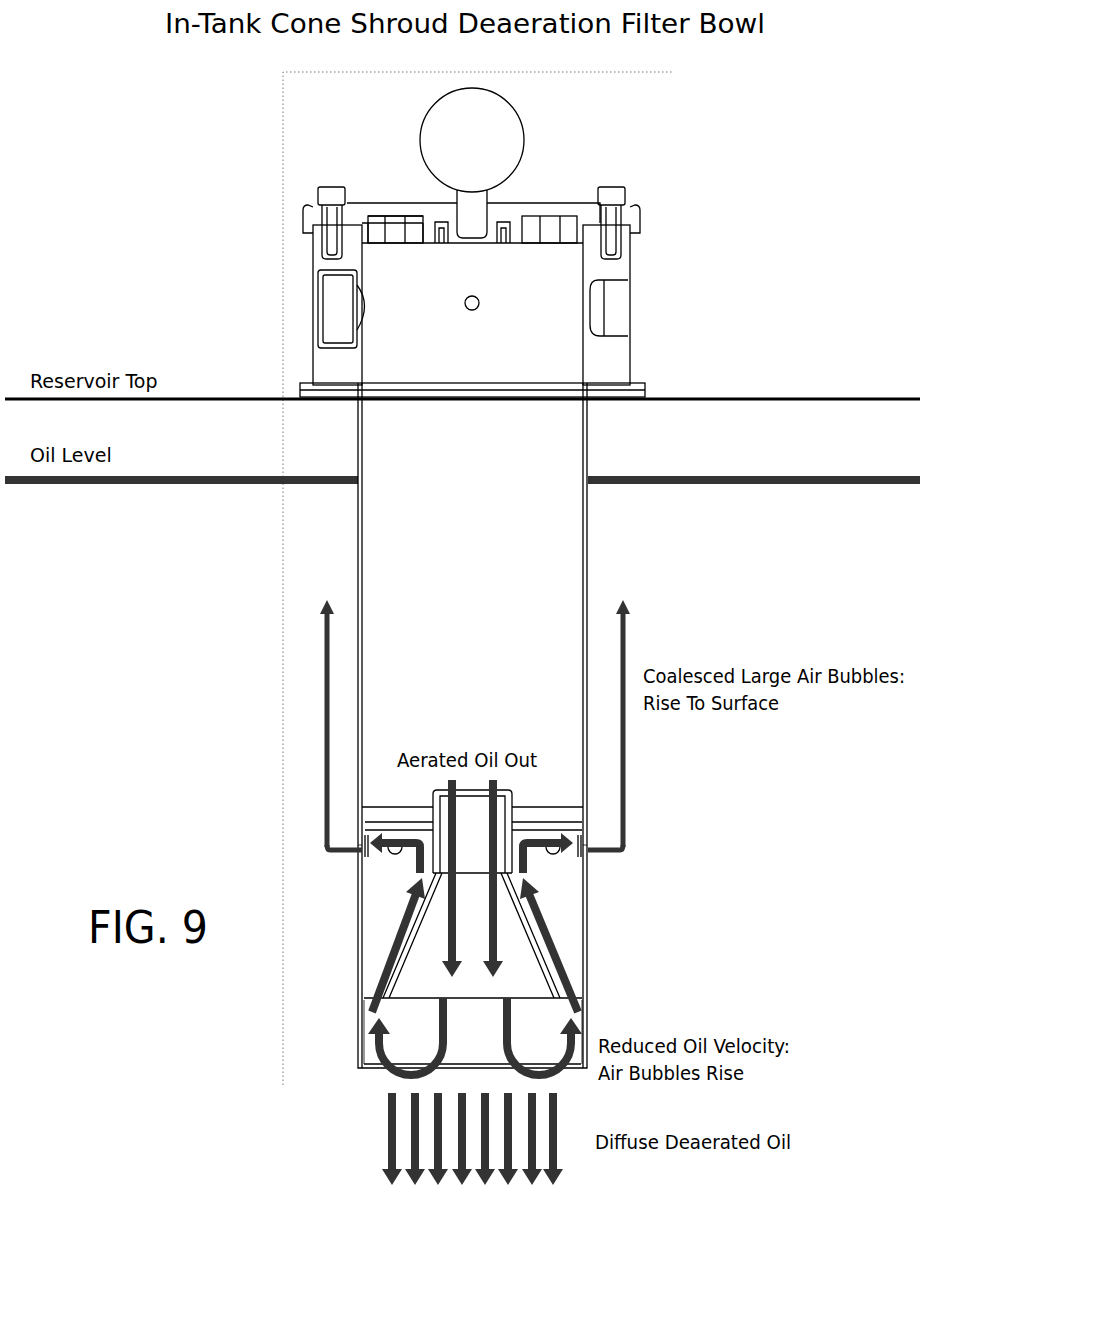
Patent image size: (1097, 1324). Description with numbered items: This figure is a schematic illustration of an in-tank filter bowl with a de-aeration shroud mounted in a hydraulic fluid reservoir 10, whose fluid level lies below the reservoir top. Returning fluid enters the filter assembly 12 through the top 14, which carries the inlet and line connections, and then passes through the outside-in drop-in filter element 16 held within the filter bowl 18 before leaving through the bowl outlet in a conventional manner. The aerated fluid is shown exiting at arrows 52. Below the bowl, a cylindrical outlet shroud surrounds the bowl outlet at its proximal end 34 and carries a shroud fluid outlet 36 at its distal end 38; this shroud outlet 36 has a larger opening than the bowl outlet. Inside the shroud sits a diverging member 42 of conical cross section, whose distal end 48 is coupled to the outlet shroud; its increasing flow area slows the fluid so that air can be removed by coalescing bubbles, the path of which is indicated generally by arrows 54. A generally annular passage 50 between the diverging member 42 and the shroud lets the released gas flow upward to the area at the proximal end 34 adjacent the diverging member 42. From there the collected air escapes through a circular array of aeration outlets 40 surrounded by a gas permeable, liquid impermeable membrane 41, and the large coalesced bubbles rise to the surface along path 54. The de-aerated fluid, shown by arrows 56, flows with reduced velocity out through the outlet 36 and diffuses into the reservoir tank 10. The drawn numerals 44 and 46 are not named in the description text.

The reservoir 10 is at (697, 398).
The filter assembly 12 is at (519, 242).
The top 14 is at (502, 295).
The filter element 16 is at (432, 456).
The filter bowl 18 is at (592, 462).
The proximal end 34 is at (598, 822).
The shroud fluid outlet 36 is at (570, 1070).
The distal end 38 is at (366, 1060).
The aeration outlets 40 is at (586, 862).
The gas permeable-liquid impermeable membrane 41 is at (356, 852).
The diverging member 42 is at (476, 932).
The cone gap 44 is at (414, 866).
The bottom plate 46 is at (409, 999).
The distal end of the diverging member 48 is at (380, 950).
The annular passage 50 is at (562, 905).
The arrows (aerated fluid exit) 52 is at (500, 792).
The path (coalescing air bubbles) 54 is at (323, 800).
The arrows (de-aerated fluid) 56 is at (560, 1162).